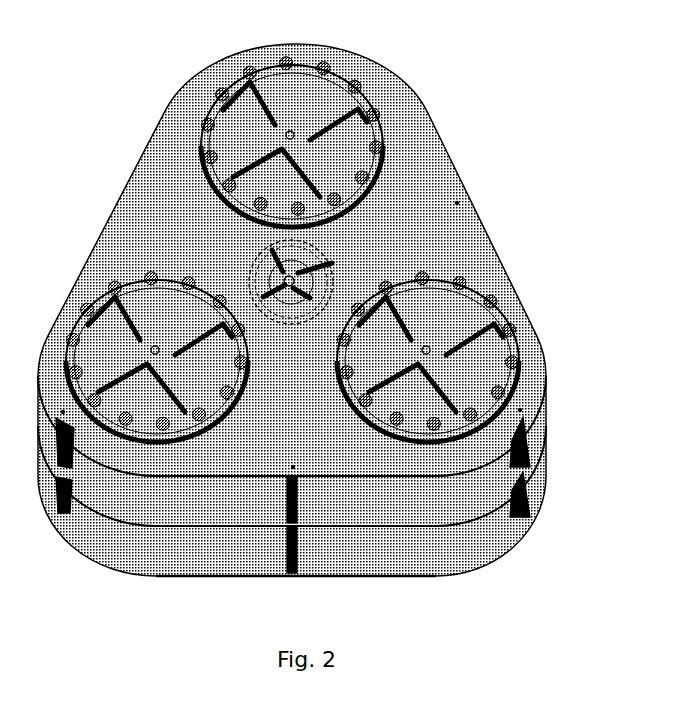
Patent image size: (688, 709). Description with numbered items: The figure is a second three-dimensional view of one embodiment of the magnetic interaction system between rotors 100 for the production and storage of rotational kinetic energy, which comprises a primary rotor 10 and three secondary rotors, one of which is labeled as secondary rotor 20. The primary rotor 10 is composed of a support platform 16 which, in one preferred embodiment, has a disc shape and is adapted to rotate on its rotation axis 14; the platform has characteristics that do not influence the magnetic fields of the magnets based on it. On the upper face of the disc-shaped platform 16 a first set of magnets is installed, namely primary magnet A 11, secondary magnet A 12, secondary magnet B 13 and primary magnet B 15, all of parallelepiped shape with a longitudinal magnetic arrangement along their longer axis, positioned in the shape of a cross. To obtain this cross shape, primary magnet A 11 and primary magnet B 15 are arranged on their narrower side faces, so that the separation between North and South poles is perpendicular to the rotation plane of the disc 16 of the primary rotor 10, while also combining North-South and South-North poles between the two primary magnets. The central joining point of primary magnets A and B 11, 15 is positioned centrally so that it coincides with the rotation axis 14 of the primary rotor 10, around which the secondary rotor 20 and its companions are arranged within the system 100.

The magnetic interaction system between rotors 100 is at (163, 100).
The primary rotor 10 is at (347, 267).
The primary magnet A of the primary rotor 11 is at (258, 292).
The secondary magnet A of the primary rotor 12 is at (278, 250).
The secondary magnet B of the primary rotor 13 is at (308, 302).
The rotation axis of the primary rotor 14 is at (287, 306).
The primary magnet B of the primary rotor 15 is at (334, 262).
The support platform of the primary rotor 16 is at (270, 278).
The secondary rotor 20 is at (528, 337).